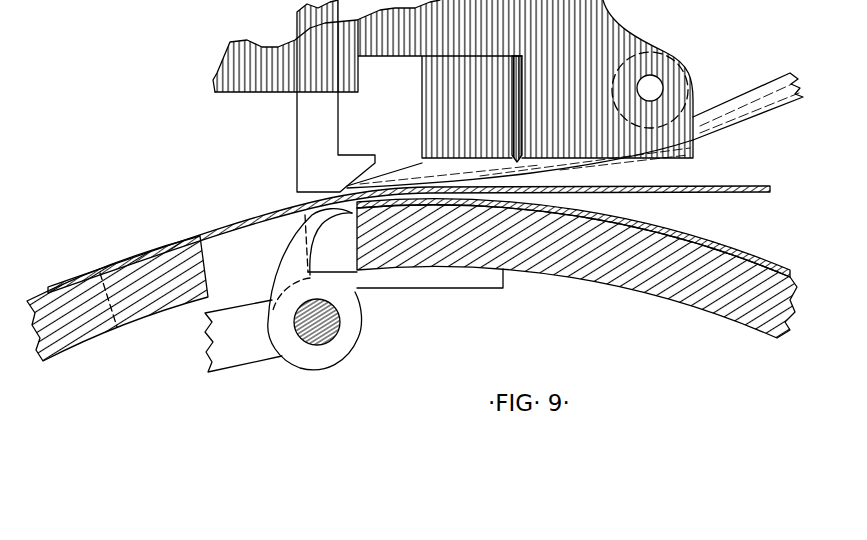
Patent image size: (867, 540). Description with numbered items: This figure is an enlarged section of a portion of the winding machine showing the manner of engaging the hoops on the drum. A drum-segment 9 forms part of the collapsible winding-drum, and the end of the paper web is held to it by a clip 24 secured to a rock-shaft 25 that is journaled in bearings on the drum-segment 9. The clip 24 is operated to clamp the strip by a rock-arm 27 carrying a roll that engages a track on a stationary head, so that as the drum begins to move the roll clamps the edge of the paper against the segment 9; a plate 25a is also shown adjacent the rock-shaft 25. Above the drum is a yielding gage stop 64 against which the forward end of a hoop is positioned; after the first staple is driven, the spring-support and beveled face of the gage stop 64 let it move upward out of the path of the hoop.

The drum-segment 9 is at (92, 320).
The clip 24 is at (292, 258).
The rock-shaft 25 is at (318, 338).
The support plate 25a is at (421, 276).
The rock-arm 27 is at (231, 347).
The gage stop 64 is at (312, 135).